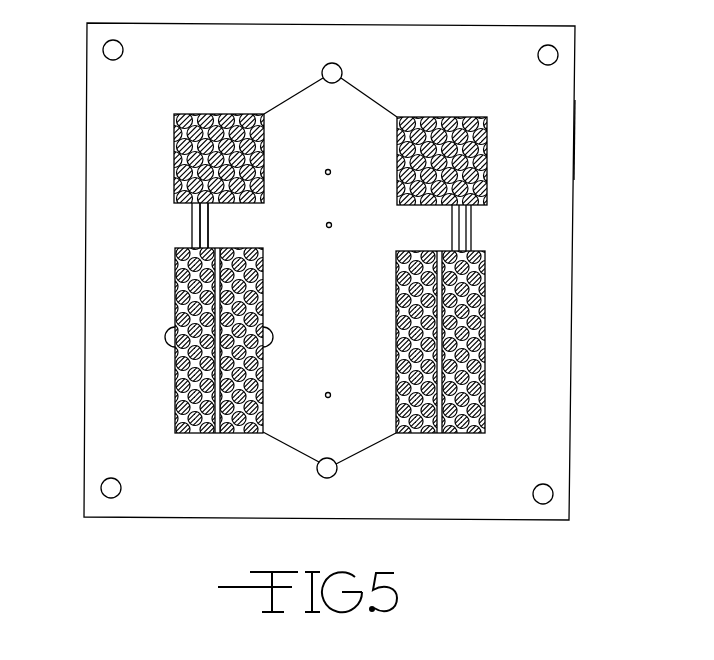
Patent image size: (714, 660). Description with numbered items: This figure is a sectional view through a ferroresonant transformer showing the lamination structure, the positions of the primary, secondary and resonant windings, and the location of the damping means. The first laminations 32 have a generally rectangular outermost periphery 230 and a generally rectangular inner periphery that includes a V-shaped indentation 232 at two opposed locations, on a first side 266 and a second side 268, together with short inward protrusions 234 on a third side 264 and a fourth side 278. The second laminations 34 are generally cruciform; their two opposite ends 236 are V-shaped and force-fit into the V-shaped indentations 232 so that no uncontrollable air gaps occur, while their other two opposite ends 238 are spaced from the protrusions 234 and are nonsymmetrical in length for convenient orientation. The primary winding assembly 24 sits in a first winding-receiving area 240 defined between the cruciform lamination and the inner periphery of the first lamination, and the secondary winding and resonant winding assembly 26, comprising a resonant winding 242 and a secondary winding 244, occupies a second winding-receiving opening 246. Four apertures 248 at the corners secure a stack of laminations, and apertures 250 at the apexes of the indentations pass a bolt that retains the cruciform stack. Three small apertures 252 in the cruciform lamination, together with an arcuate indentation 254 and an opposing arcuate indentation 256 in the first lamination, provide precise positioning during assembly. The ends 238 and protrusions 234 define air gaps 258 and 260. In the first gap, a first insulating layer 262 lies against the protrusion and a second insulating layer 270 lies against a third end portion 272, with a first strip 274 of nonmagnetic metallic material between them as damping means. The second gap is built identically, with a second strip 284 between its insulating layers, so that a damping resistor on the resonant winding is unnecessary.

The primary winding assembly 24 is at (223, 111).
The secondary winding and resonant winding assembly 26 is at (453, 342).
The first laminations 32 is at (578, 140).
The second laminations 34 is at (380, 124).
The outermost periphery 230 is at (577, 84).
The V-shaped indentation 232 is at (274, 267).
The short inward protrusions 234 is at (330, 240).
The opposite ends 236 is at (390, 271).
The opposite ends 238 is at (335, 240).
The first winding-receiving area 240 is at (323, 123).
The resonant winding 242 is at (398, 365).
The secondary winding 244 is at (443, 342).
The second winding-receiving opening 246 is at (329, 340).
The apertures 248 is at (113, 50).
The apertures 250 is at (338, 66).
The small apertures 252 is at (331, 175).
The arcuate indentation 254 is at (272, 337).
The arcuate indentation 256 is at (165, 337).
The air gap 258 is at (154, 225).
The air gap 260 is at (511, 242).
The first insulating layer 262 is at (194, 243).
The third side 264 is at (215, 340).
The first side 266 is at (282, 96).
The second side 268 is at (282, 449).
The second insulating layer 270 is at (159, 225).
The third end portion 272 is at (208, 243).
The first strip 274 is at (210, 237).
The fourth side 278 is at (473, 212).
The second strip 284 is at (511, 242).